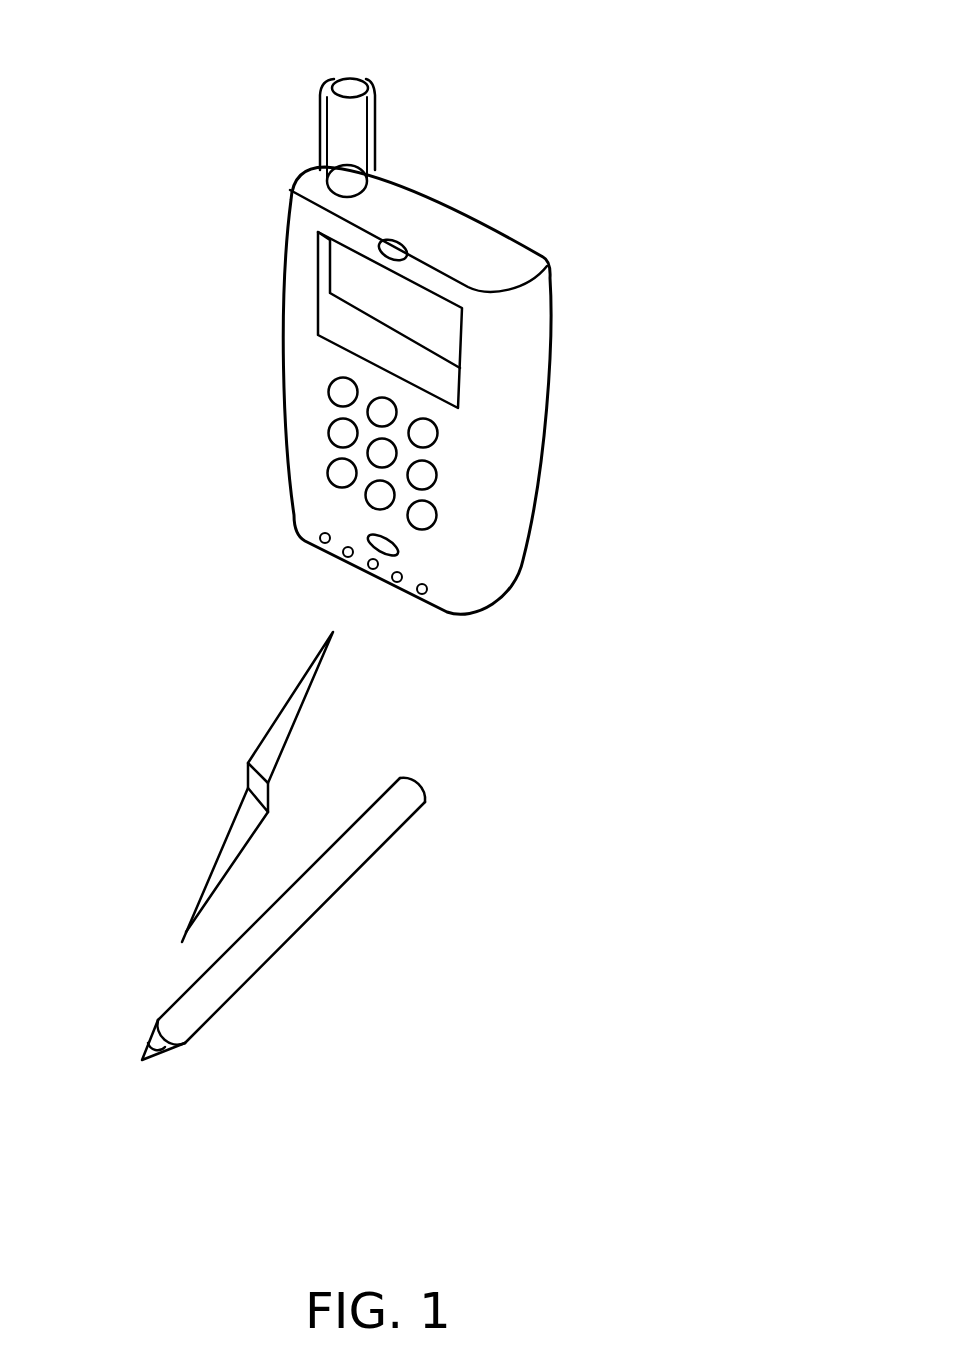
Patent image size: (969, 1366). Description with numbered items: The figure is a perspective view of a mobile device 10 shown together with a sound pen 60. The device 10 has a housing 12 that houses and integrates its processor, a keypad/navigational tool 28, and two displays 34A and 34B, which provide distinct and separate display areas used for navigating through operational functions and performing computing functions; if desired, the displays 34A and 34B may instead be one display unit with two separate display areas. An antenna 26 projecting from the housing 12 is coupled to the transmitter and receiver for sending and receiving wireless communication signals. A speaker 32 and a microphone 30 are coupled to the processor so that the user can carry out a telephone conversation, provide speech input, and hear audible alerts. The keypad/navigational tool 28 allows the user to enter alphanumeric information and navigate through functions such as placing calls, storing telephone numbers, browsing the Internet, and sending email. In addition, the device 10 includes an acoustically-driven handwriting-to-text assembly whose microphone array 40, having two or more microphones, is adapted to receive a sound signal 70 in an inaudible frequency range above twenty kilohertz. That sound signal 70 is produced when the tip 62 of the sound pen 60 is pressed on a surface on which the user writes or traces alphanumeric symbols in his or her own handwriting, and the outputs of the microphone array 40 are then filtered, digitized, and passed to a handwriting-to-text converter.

The mobile device 10 is at (558, 132).
The housing 12 is at (390, 172).
The antenna 26 is at (345, 85).
The keypad/navigational tool 28 is at (435, 482).
The microphone 30 is at (398, 555).
The speaker 32 is at (392, 250).
The display 34A is at (408, 305).
The display 34B is at (447, 382).
The microphone array 40 is at (370, 570).
The sound pen 60 is at (251, 919).
The tip 62 is at (145, 1045).
The sound signal 70 is at (232, 802).